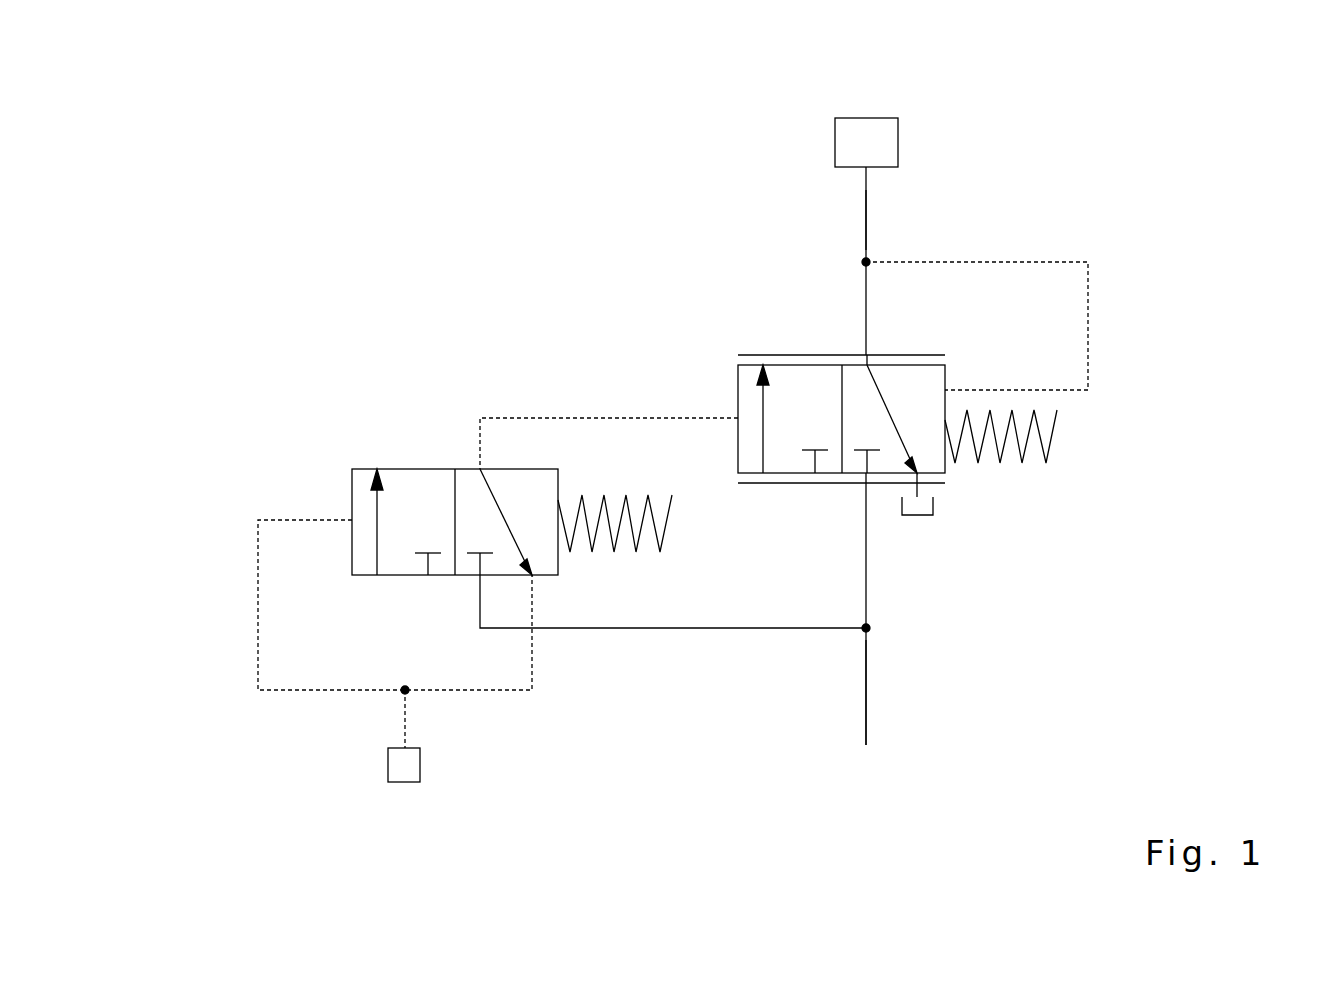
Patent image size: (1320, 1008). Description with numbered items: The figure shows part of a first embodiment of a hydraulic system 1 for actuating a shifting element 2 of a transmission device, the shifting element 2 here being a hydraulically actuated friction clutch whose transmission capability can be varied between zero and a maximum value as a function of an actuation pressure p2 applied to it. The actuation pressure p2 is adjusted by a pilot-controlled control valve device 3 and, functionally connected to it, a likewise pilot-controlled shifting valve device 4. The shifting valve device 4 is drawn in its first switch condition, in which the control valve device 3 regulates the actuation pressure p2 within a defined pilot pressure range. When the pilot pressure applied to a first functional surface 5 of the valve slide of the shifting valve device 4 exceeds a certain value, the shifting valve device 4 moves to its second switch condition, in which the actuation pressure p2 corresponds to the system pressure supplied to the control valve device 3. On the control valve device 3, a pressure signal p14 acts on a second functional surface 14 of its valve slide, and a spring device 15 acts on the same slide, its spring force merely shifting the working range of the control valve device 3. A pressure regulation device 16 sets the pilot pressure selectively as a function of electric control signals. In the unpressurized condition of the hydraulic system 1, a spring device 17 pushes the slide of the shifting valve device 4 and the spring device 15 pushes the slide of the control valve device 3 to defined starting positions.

The hydraulic system 1 is at (385, 245).
The shifting element 2 is at (865, 138).
The control valve device 3 is at (970, 490).
The shifting valve device 4 is at (362, 447).
The first functional surface 5 is at (346, 495).
The second functional surface 14 is at (732, 380).
The spring device 15 is at (1055, 438).
The pressure regulation device 16 is at (410, 765).
The spring device 17 is at (615, 548).
The actuation pressure p2 is at (866, 218).
The pressure signal p14 is at (605, 418).